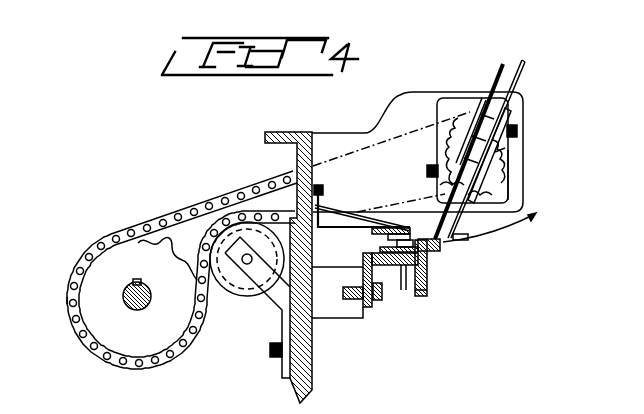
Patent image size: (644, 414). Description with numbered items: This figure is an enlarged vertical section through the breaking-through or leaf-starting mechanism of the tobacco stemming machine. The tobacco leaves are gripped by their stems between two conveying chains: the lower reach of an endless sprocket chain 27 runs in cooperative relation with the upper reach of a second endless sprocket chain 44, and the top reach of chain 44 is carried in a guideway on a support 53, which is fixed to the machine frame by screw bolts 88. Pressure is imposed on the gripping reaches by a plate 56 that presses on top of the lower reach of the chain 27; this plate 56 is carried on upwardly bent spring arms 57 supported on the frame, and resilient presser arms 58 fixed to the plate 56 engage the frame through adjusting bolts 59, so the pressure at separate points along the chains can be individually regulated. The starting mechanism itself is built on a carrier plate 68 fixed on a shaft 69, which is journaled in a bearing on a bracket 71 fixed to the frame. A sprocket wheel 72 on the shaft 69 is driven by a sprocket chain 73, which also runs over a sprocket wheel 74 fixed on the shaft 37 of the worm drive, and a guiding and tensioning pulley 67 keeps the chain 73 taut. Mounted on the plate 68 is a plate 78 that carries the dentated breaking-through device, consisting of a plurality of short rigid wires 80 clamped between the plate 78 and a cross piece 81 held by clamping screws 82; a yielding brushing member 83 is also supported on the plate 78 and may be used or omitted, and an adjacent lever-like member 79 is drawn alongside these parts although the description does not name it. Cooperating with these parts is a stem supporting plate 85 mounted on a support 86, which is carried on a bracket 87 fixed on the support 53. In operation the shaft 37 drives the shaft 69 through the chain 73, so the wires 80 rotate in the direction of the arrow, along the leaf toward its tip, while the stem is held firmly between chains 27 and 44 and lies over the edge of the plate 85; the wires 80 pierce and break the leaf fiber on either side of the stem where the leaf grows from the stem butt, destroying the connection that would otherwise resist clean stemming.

The endless sprocket chain 27 is at (393, 249).
The shaft 37 is at (127, 291).
The endless sprocket chain 44 is at (404, 268).
The support 53 is at (362, 278).
The plate 56 is at (372, 236).
The spring arm 57 is at (333, 229).
The resilient presser arm 58 is at (343, 212).
The adjusting bolt 59 is at (322, 185).
The guiding and tensioning pulley 67 is at (237, 290).
The plate 68 is at (507, 98).
The shaft 69 is at (500, 152).
The bracket 71 is at (410, 98).
The sprocket wheel 72 is at (520, 164).
The sprocket chain 73 is at (193, 208).
The sprocket wheel 74 is at (110, 334).
The plate 78 is at (516, 109).
The lever 79 is at (503, 67).
The short rigid wire 80 is at (489, 227).
The cross piece 81 is at (510, 191).
The clamping screw 82 is at (517, 131).
The yielding brushing member 83 is at (520, 62).
The stem supporting plate 85 is at (440, 244).
The support 86 is at (428, 278).
The bracket 87 is at (425, 300).
The screw bolt 88 is at (379, 303).